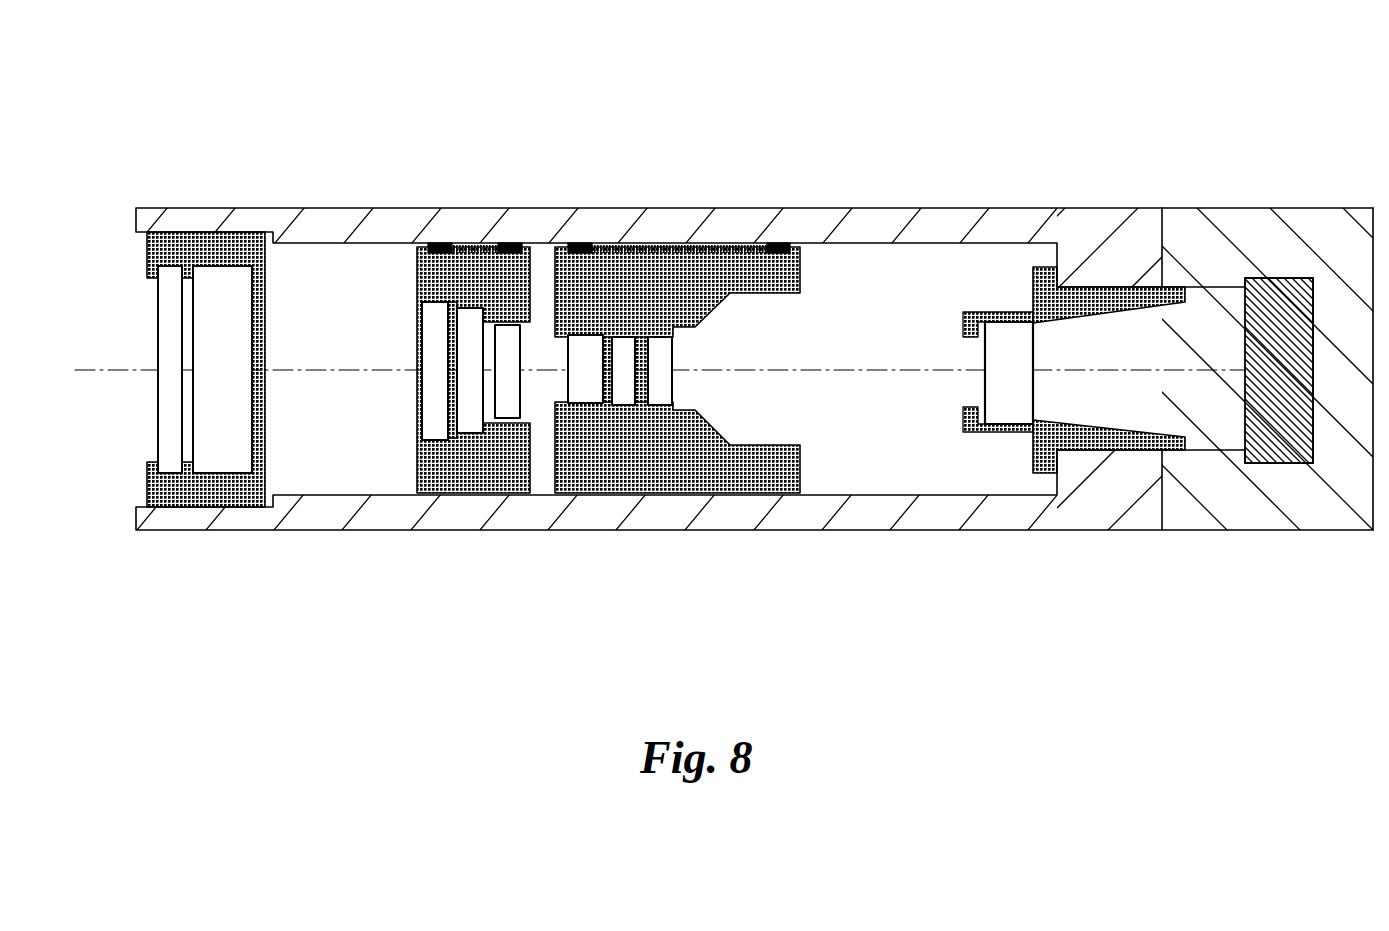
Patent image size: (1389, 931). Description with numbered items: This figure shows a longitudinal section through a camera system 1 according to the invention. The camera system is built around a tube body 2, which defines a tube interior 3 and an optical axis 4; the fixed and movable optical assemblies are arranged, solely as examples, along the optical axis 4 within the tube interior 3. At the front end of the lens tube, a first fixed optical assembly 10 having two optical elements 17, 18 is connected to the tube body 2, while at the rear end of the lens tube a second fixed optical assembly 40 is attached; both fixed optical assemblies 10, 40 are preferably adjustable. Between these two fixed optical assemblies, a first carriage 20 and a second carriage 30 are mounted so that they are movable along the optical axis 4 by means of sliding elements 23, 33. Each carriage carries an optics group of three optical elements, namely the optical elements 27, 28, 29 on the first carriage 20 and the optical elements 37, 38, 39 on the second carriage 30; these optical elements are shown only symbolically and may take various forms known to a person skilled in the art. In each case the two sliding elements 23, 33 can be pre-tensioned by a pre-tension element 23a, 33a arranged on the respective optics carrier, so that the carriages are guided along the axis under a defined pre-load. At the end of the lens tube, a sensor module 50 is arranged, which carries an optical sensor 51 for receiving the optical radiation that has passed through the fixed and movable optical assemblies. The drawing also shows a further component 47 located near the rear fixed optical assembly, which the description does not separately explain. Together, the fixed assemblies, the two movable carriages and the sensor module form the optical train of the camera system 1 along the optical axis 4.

The camera system 1 is at (154, 152).
The tube body 2 is at (758, 408).
The tube interior 3 is at (772, 504).
The optical axis 4 is at (660, 257).
The first fixed optical assembly 10 is at (226, 325).
The optical element 17 is at (216, 453).
The optical element 18 is at (251, 437).
The first carriage 20 is at (445, 318).
The sliding element 23 is at (478, 180).
The pre-tension element 23a is at (420, 180).
The optical element 27 is at (379, 436).
The optical element 28 is at (412, 458).
The optical element 29 is at (449, 483).
The second carriage 30 is at (677, 318).
The sliding element 33 is at (721, 180).
The pre-tension element 33a is at (660, 180).
The optical element 37 is at (545, 453).
The optical element 38 is at (580, 472).
The optical element 39 is at (615, 489).
The second fixed optical assembly 40 is at (1058, 308).
The insert 47 is at (965, 441).
The sensor module 50 is at (1070, 385).
The optical sensor 51 is at (1224, 303).